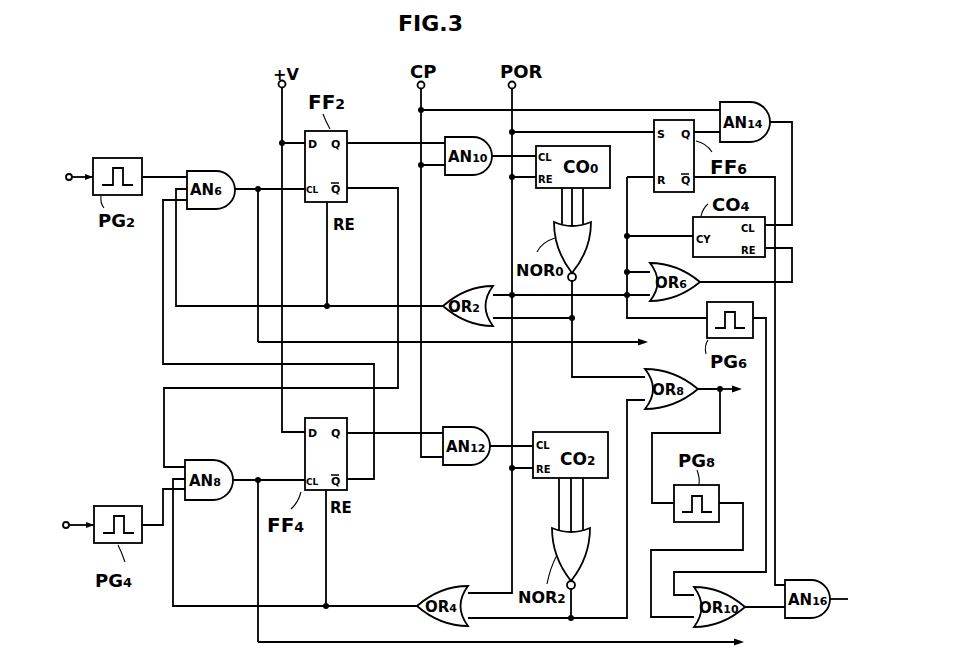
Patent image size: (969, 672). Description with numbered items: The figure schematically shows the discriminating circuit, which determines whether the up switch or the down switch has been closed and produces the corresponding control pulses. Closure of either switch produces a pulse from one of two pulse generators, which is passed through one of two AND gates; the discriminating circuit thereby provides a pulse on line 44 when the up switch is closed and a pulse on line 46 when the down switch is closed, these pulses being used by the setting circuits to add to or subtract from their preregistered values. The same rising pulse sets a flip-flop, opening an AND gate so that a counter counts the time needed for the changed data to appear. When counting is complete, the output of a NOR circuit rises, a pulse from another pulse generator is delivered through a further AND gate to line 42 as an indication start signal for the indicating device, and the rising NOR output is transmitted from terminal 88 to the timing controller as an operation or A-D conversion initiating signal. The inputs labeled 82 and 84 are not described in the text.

The first input terminal 82 is at (60, 188).
The second input terminal 84 is at (71, 509).
The line 44 is at (470, 344).
The terminal 88 is at (740, 404).
The line 42 is at (856, 600).
The line 46 is at (518, 645).